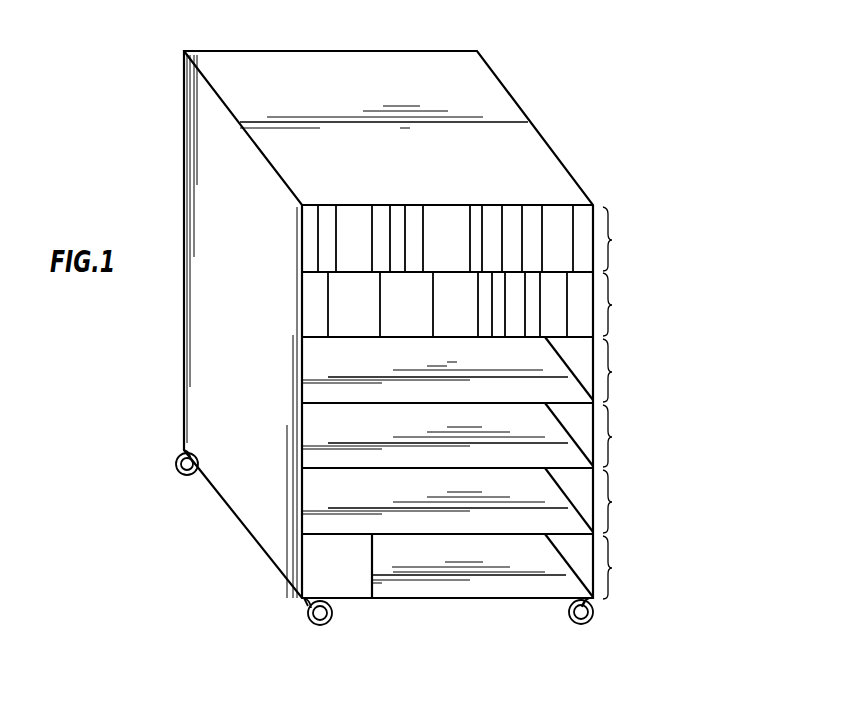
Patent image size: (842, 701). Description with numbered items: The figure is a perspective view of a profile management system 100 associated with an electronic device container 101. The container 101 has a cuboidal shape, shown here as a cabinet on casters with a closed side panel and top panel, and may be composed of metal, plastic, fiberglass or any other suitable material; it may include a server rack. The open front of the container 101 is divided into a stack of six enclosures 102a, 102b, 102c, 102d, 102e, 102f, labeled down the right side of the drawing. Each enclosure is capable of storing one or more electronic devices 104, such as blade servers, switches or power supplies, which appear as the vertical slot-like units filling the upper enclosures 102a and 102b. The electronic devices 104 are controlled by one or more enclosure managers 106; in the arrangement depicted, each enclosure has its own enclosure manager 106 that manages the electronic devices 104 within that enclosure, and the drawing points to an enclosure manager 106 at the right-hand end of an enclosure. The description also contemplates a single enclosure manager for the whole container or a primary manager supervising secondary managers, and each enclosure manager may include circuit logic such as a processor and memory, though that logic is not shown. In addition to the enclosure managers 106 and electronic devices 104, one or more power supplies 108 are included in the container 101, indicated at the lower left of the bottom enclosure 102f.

The profile management system 100 is at (697, 81).
The electronic device container 101 is at (485, 100).
The enclosure 102a is at (612, 240).
The enclosure 102b is at (612, 305).
The enclosure 102c is at (612, 372).
The enclosure 102d is at (612, 437).
The enclosure 102e is at (612, 502).
The enclosure 102f is at (612, 568).
The electronic devices 104 is at (557, 295).
The enclosure manager 106 is at (585, 220).
The power supply 108 is at (355, 580).